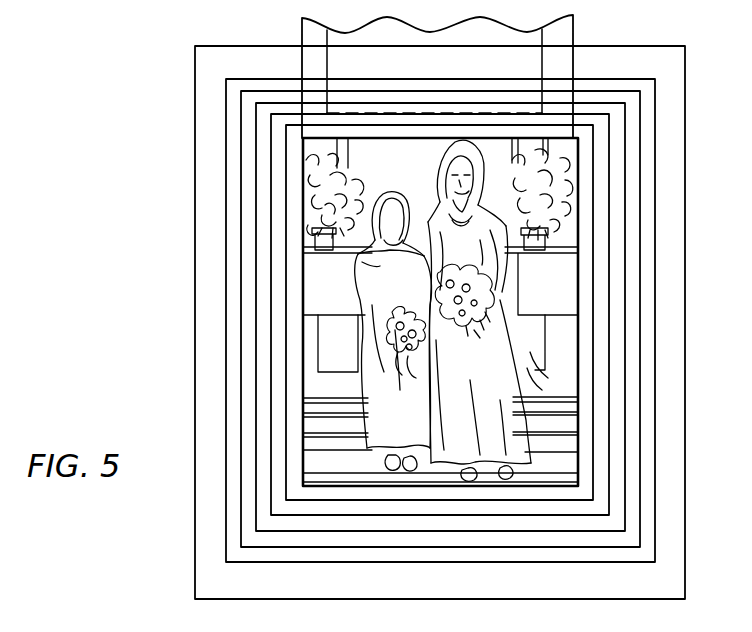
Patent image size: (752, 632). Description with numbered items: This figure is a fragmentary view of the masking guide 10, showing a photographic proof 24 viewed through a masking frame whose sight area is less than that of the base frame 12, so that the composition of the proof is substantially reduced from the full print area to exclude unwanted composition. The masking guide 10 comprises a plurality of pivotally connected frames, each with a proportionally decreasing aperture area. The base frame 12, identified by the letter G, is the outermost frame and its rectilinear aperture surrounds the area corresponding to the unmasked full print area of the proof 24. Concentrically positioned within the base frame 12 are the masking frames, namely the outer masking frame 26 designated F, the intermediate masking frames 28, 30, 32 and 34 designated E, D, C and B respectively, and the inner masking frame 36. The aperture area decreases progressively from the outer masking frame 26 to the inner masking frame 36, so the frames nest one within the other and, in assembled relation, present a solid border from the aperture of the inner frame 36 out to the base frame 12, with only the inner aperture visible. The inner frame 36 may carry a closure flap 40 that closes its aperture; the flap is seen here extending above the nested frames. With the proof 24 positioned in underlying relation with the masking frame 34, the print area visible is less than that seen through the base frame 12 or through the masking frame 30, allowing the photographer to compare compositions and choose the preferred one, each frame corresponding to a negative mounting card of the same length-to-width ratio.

The masking guide 10 is at (163, 86).
The base frame 12 is at (203, 136).
The photographic proof 24 is at (320, 383).
The outer masking frame 26 is at (230, 160).
The intermediate masking frame 28 is at (247, 193).
The intermediate masking frame 30 is at (262, 230).
The intermediate masking frame 32 is at (278, 265).
The intermediate masking frame 34 is at (292, 322).
The inner masking frame 36 is at (310, 45).
The closure flap 40 is at (414, 68).